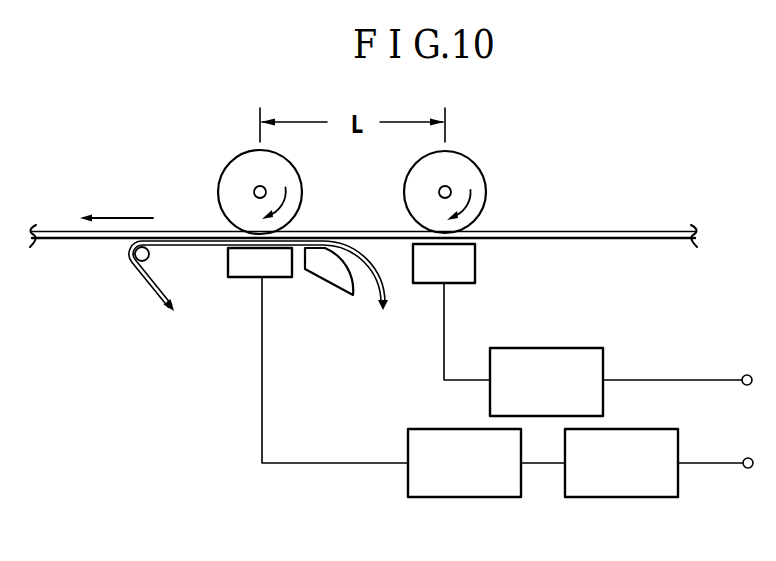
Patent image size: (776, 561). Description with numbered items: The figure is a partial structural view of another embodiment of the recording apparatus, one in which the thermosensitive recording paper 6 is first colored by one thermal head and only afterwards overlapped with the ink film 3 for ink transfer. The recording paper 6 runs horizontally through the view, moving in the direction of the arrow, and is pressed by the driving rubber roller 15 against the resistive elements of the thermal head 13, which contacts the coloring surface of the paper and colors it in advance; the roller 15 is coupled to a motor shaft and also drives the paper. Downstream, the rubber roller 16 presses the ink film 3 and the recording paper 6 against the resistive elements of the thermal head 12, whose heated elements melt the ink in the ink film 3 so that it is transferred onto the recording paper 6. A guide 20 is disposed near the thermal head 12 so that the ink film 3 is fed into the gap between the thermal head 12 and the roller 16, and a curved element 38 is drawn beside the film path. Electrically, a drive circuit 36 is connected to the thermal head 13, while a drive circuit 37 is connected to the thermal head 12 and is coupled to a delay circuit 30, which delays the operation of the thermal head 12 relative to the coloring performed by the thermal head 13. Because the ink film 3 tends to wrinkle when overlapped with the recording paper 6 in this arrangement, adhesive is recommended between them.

The ink film 3 is at (372, 270).
The thermosensitive recording paper 6 is at (632, 231).
The thermal head 12 is at (247, 279).
The thermal head 13 is at (431, 285).
The driving rubber roller 15 is at (482, 190).
The rubber roller 16 is at (296, 191).
The guide 20 is at (150, 255).
The delay circuit 30 is at (650, 498).
The drive circuit 36 is at (578, 348).
The drive circuit 37 is at (473, 498).
The guide 38 is at (333, 276).